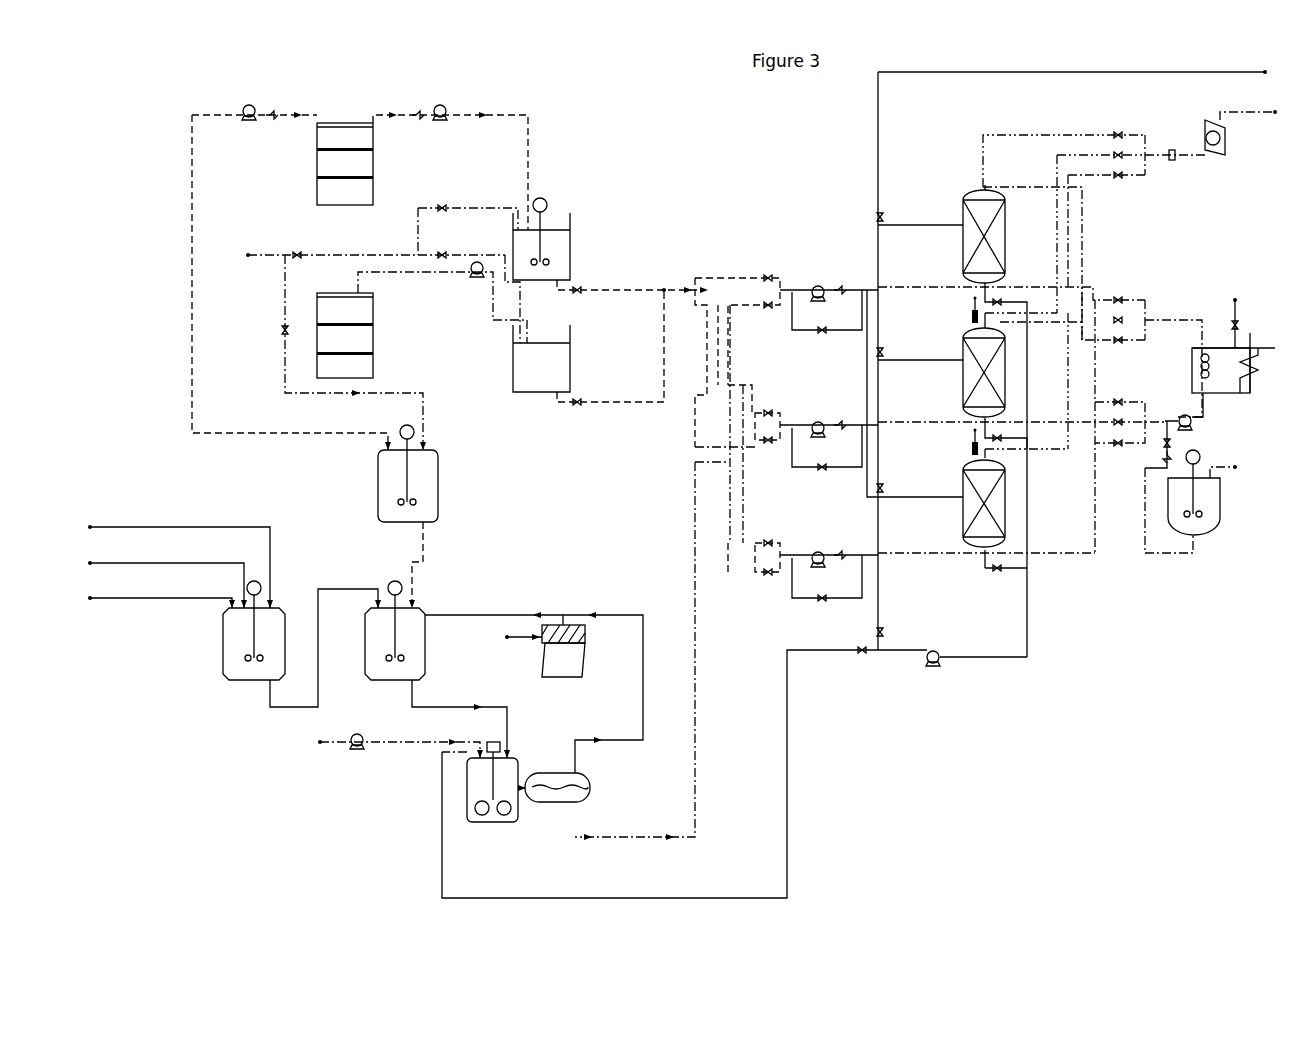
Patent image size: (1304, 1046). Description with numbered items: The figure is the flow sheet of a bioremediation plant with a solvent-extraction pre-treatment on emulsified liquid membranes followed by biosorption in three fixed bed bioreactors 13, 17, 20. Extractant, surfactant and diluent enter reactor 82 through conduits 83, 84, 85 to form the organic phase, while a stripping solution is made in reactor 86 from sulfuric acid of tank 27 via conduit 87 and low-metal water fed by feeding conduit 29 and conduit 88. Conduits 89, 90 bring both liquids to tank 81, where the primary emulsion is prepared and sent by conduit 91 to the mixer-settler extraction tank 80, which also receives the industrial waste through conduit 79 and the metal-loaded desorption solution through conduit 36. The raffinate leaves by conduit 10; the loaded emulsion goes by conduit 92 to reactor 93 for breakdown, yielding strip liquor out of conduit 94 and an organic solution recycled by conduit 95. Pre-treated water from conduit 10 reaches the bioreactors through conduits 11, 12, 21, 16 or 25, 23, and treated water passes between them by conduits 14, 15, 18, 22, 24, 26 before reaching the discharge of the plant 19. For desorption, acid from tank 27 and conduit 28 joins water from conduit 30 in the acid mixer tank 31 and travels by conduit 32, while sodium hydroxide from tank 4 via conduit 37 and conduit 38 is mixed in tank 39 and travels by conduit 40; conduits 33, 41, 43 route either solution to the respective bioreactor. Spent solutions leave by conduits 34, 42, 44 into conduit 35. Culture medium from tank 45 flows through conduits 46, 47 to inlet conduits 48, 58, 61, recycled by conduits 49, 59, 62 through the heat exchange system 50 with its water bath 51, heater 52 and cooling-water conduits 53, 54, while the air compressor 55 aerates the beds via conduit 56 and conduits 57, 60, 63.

The tank 4 is at (373, 342).
The conduit 10 is at (670, 838).
The conduit 11 is at (733, 316).
The conduit 12 is at (965, 300).
The fixed bed bioreactor 13 is at (963, 245).
The conduit 14 is at (936, 225).
The conduit 15 is at (792, 468).
The conduit 16 is at (965, 435).
The fixed bed bioreactor 17 is at (963, 380).
The conduit 18 is at (930, 360).
The discharge of the plant 19 is at (1246, 72).
The fixed bed bioreactor 20 is at (963, 510).
The conduit 21 is at (765, 442).
The conduit 22 is at (792, 598).
The conduit 23 is at (975, 560).
The conduit 24 is at (945, 497).
The conduit 25 is at (760, 574).
The conduit 26 is at (792, 325).
The tank 27 is at (373, 168).
The conduit 28 is at (503, 118).
The feeding conduit 29 is at (255, 260).
The conduit 30 is at (480, 208).
The acid mixer tank 31 is at (570, 245).
The conduit 32 is at (664, 290).
The conduit 33 is at (735, 278).
The conduit 34 is at (1024, 306).
The conduit 35 is at (1029, 585).
The conduit 36 is at (542, 898).
The conduit 37 is at (490, 300).
The conduit 38 is at (525, 305).
The sodium hydroxide mixer tank 39 is at (570, 355).
The conduit 40 is at (640, 402).
The conduit 41 is at (752, 413).
The conduit 42 is at (1027, 426).
The conduit 43 is at (712, 447).
The conduit 44 is at (1000, 575).
The culture medium preparation tank 45 is at (1168, 512).
The conduit 46 is at (1170, 553).
The conduit 47 is at (1175, 320).
The conduit 48 is at (1082, 252).
The conduit 49 is at (1033, 287).
The heat exchange system 50 is at (1196, 380).
The water bath 51 is at (1206, 396).
The heater 52 is at (1257, 378).
The conduit 53 is at (1236, 300).
The conduit 54 is at (1248, 348).
The air compressor 55 is at (1225, 155).
The conduit 56 is at (1172, 150).
The conduit 57 is at (1024, 135).
The conduit 58 is at (1030, 332).
The conduit 59 is at (1066, 368).
The conduit 60 is at (1057, 170).
The conduit 61 is at (1062, 462).
The conduit 62 is at (1060, 553).
The conduit 63 is at (1125, 177).
The conduit 79 is at (340, 746).
The mixer-settler extraction tank 80 is at (470, 820).
The tank 81 is at (365, 660).
The reactor 82 is at (223, 660).
The conduit 83 is at (122, 527).
The conduit 84 is at (114, 563).
The conduit 85 is at (112, 598).
The reactor 86 is at (400, 522).
The conduit 87 is at (192, 328).
The conduit 88 is at (285, 382).
The conduit 89 is at (428, 562).
The conduit 90 is at (356, 589).
The conduit 91 is at (466, 707).
The conduit 92 is at (645, 690).
The reactor 93 is at (585, 670).
The conduit 94 is at (512, 637).
The conduit 95 is at (512, 615).